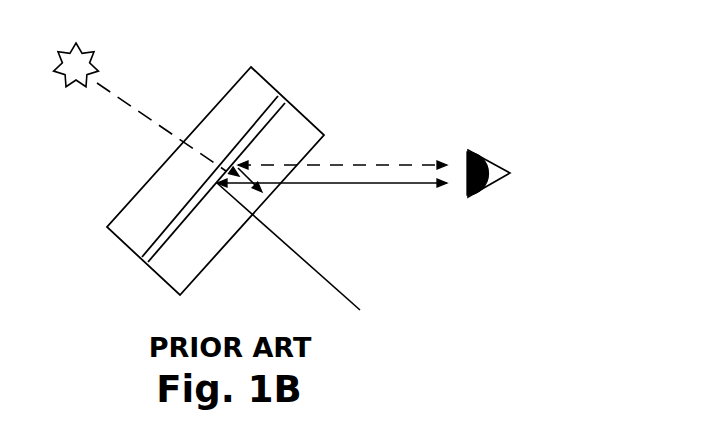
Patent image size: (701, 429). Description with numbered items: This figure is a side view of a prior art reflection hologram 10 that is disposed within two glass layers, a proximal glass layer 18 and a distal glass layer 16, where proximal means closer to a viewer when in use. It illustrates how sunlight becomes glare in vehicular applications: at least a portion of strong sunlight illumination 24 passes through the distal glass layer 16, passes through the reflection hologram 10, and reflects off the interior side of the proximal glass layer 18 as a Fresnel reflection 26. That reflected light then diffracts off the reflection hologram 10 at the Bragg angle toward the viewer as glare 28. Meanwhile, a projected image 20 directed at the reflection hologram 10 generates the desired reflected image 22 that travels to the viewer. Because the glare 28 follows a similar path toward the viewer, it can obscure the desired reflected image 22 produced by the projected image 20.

The reflection hologram 10 is at (142, 257).
The distal glass layer 16 is at (147, 200).
The proximal glass layer 18 is at (205, 248).
The projected image 20 is at (306, 256).
The reflected image 22 is at (412, 185).
The sunlight illumination 24 is at (163, 127).
The Fresnel reflection 26 is at (237, 175).
The glare 28 is at (408, 166).